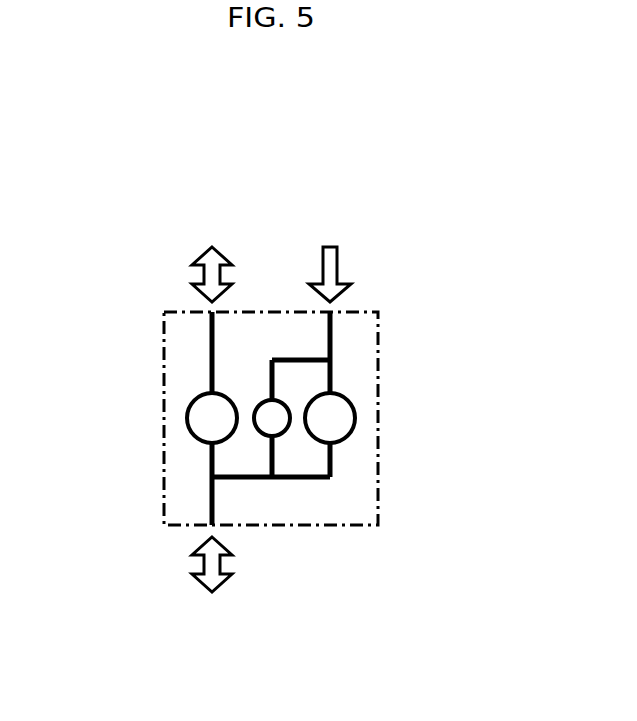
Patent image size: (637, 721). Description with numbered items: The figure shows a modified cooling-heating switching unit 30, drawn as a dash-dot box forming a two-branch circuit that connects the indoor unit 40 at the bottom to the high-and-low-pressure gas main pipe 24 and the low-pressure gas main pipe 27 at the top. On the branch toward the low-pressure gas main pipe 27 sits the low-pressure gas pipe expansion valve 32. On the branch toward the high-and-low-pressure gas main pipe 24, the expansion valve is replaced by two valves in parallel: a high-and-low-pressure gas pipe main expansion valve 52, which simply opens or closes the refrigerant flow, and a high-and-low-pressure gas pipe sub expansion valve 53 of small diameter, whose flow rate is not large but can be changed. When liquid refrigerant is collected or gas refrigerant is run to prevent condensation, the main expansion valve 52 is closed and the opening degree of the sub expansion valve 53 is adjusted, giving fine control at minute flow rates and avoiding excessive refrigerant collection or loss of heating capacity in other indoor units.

The high-and-low-pressure gas main pipe 24 is at (400, 211).
The low-pressure gas main pipe 27 is at (136, 226).
The cooling-heating switching unit 30 is at (378, 352).
The low-pressure gas pipe expansion valve 32 is at (187, 418).
The indoor unit 40 is at (214, 610).
The high-and-low-pressure gas pipe main expansion valve 52 is at (355, 418).
The high-and-low-pressure gas pipe sub expansion valve 53 is at (259, 407).